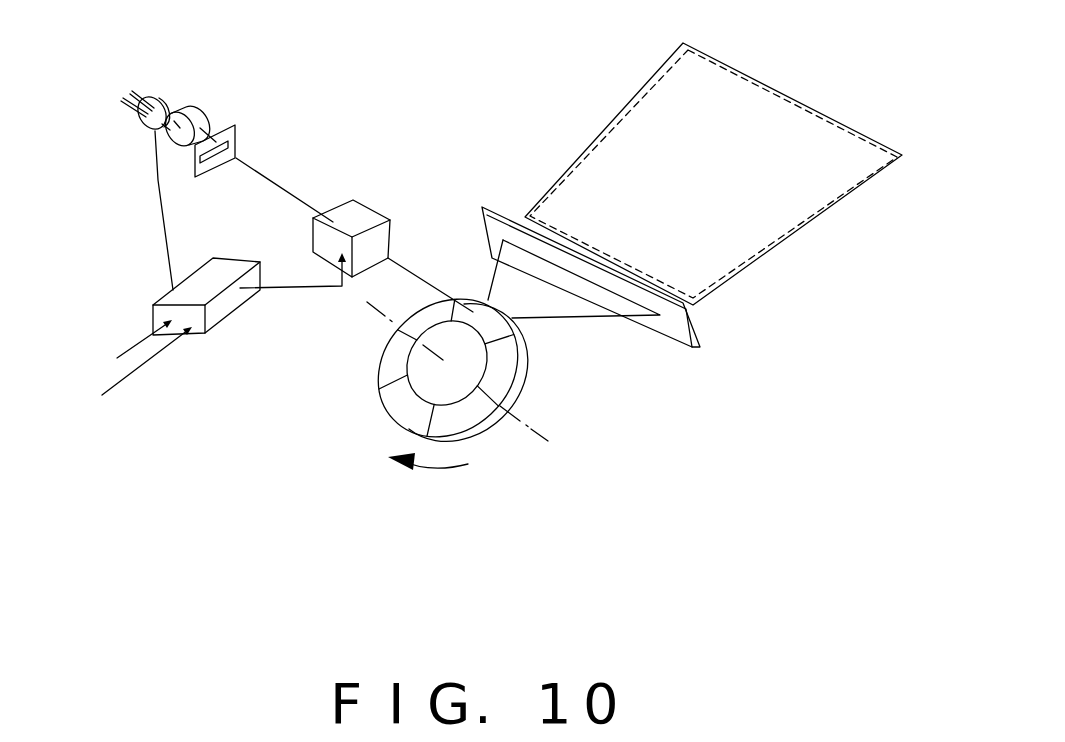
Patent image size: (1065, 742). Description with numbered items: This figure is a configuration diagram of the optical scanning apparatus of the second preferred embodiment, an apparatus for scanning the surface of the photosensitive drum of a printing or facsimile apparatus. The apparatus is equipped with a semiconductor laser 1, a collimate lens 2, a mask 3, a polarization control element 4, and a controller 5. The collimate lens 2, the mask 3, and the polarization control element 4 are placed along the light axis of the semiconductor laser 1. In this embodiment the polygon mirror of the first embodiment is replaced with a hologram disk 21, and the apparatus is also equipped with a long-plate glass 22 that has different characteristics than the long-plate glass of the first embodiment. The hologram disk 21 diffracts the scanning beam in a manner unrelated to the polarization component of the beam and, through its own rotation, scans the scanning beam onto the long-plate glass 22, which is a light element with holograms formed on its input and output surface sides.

The semiconductor laser 1 is at (157, 96).
The collimate lens 2 is at (196, 112).
The mask 3 is at (235, 125).
The polarization control element 4 is at (367, 218).
The controller 5 is at (224, 313).
The hologram disk 21 is at (386, 400).
The long-plate glass 22 is at (680, 335).